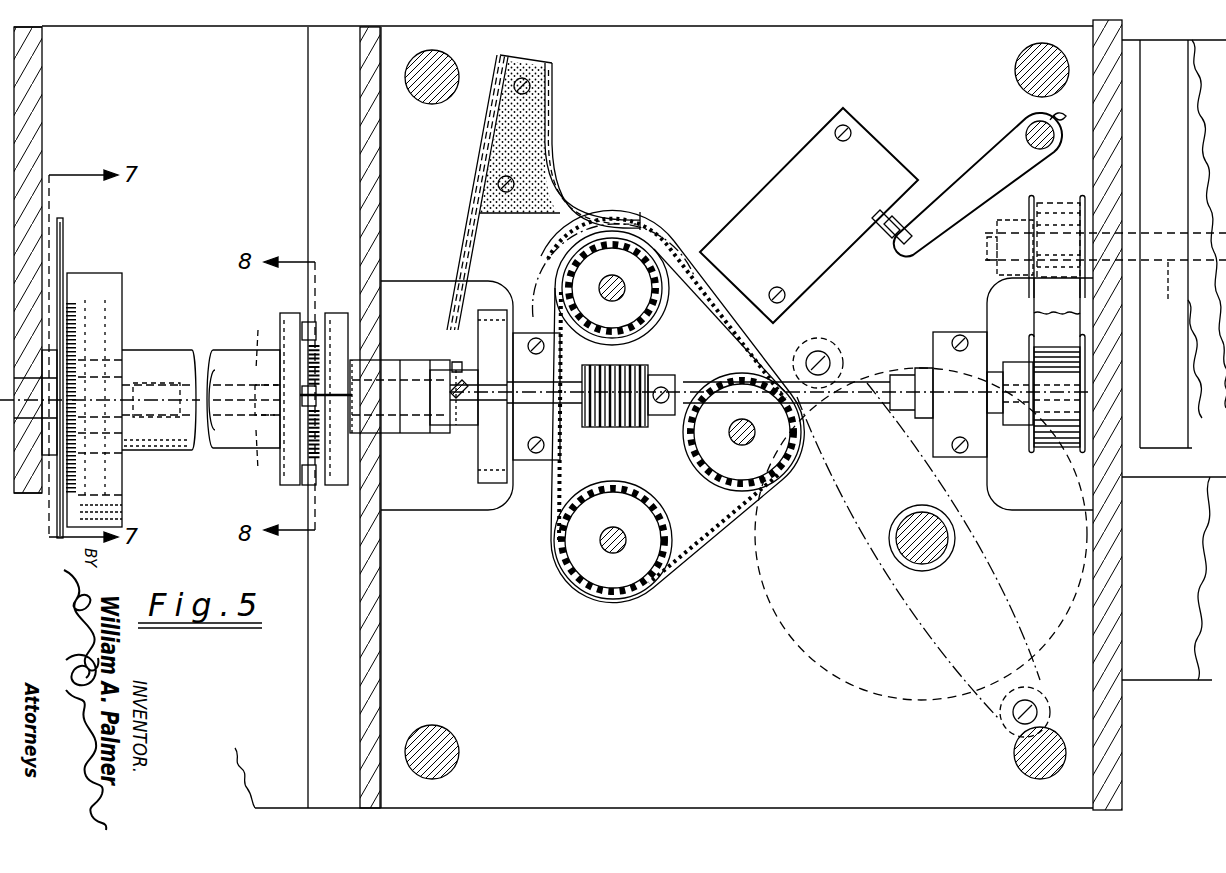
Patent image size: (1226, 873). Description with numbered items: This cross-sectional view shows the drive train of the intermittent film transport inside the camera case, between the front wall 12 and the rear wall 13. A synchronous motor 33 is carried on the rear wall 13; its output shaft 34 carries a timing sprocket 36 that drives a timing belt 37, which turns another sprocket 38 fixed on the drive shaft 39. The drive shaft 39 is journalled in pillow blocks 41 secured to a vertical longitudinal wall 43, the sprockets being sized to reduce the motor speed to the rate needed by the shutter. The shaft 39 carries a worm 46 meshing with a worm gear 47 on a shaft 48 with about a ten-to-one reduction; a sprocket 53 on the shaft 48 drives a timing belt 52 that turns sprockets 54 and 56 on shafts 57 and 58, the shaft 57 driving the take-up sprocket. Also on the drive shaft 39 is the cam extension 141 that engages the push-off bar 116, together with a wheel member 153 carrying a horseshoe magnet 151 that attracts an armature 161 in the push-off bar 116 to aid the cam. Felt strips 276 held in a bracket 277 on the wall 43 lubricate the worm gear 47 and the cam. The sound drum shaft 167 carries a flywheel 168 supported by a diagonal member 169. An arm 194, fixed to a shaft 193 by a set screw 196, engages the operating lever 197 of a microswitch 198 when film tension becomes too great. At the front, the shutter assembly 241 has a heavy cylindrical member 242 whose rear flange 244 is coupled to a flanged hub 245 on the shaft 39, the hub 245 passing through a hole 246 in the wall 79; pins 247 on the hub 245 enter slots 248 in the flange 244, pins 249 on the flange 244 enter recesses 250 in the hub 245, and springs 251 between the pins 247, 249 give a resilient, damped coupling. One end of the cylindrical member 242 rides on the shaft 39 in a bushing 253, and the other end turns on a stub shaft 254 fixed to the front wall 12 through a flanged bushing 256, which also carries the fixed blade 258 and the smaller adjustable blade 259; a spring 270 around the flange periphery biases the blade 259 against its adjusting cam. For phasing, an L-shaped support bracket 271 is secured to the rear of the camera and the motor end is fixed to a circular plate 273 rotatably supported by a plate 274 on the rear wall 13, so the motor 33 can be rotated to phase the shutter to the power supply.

The front wall 12 is at (46, 84).
The rear wall 13 is at (1093, 548).
The motor 33 is at (1204, 440).
The output shaft 34 is at (984, 250).
The timing sprocket 36 is at (1025, 200).
The timing belt 37 is at (1040, 306).
The sprocket 38 is at (1032, 358).
The drive shaft 39 is at (262, 372).
The pillow blocks 41 is at (536, 462).
The vertical longitudinal wall 43 is at (664, 417).
The worm 46 is at (596, 432).
The worm gear 47 is at (630, 210).
The shaft 48 is at (612, 301).
The timing belt 52 is at (700, 545).
The sprocket 53 is at (578, 280).
The sprocket 54 is at (612, 598).
The sprocket 56 is at (712, 452).
The shaft 57 is at (632, 580).
The shaft 58 is at (729, 428).
The wall 79 is at (381, 612).
The push-off bar 116 is at (462, 376).
The extension 141 is at (442, 425).
The magnet 151 is at (470, 425).
The wheel member 153 is at (490, 470).
The armature 161 is at (456, 400).
The shaft 167 is at (912, 556).
The flywheel 168 is at (800, 660).
The diagonal member 169 is at (926, 624).
The shaft 193 is at (1026, 128).
The arm 194 is at (985, 168).
The set screw 196 is at (1062, 112).
The operating lever 197 is at (890, 232).
The Microswitch 198 is at (809, 215).
The shutter assembly 241 is at (112, 252).
The cylindrical member 242 is at (156, 356).
The flange 244 is at (292, 450).
The flanged hub 245 is at (396, 445).
The hole 246 is at (352, 490).
The pins 247 is at (318, 324).
The slots 248 is at (296, 322).
The pins 249 is at (330, 392).
The recesses 250 is at (400, 396).
The springs 251 is at (310, 372).
The bushing 253 is at (268, 448).
The stub shaft 254 is at (42, 398).
The flanged bushing 256 is at (46, 470).
The blade 258 is at (66, 266).
The blade 259 is at (62, 232).
The spring 270 is at (74, 334).
The support bracket 271 is at (1167, 578).
The circular plate 273 is at (1174, 244).
The plate 274 is at (1130, 452).
The felt strips 276 is at (418, 292).
The bracket 277 is at (515, 156).